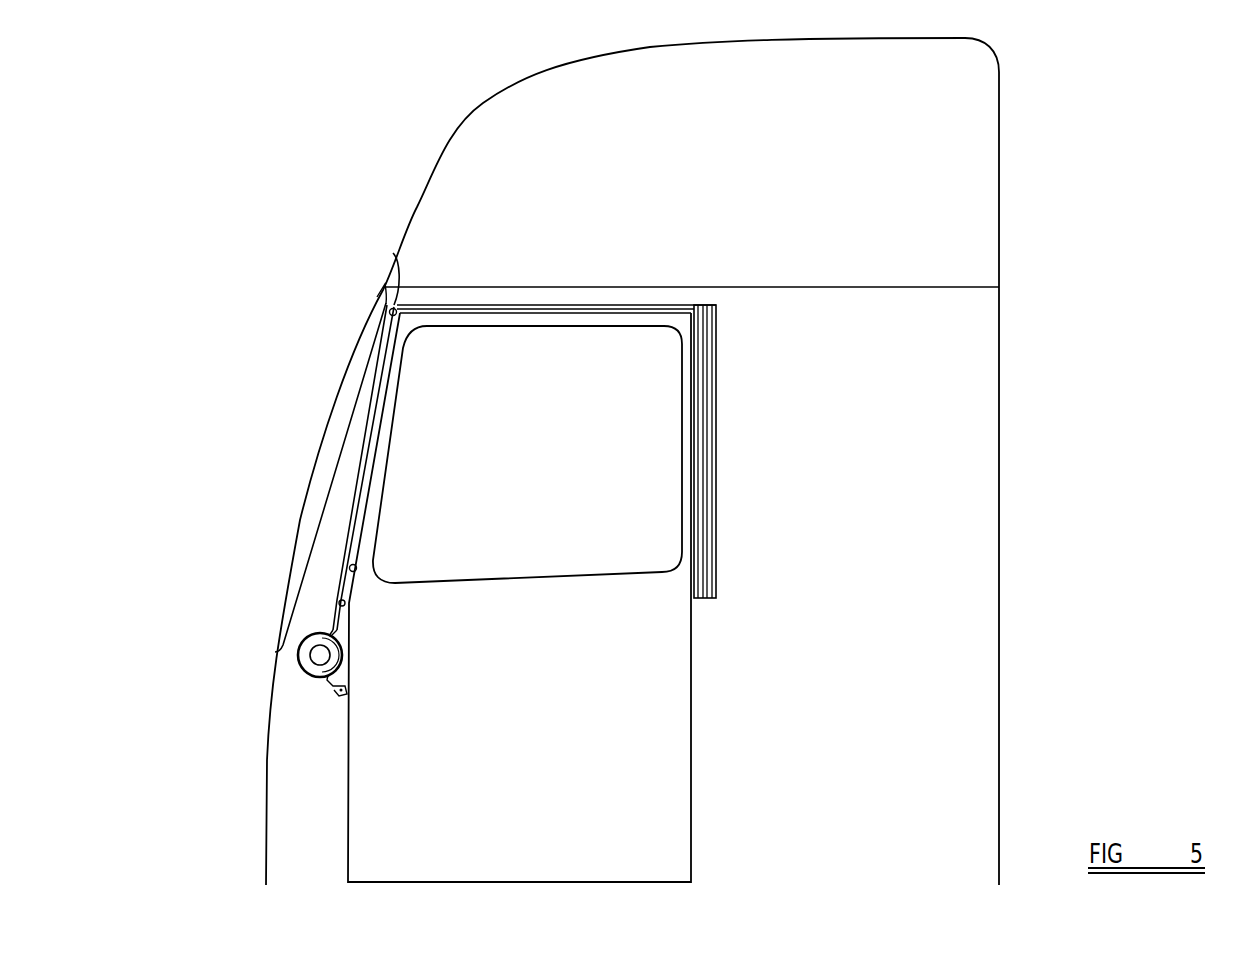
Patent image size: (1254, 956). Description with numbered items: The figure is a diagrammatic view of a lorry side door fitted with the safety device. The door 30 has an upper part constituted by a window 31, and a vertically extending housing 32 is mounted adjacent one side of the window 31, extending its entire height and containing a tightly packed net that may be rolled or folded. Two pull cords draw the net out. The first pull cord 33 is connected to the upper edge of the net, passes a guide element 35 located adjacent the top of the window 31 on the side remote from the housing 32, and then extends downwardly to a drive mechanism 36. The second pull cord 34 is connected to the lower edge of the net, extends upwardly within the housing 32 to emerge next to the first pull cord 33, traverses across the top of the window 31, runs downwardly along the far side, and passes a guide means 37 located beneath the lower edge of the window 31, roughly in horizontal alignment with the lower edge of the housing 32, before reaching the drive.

The door 30 is at (675, 812).
The window 31 is at (397, 329).
The housing 32 is at (718, 468).
The first pull cord 33 is at (351, 502).
The second pull cord 34 is at (350, 568).
The guide element 35 is at (393, 253).
The drive mechanism 36 is at (301, 661).
The guide means 37 is at (346, 604).